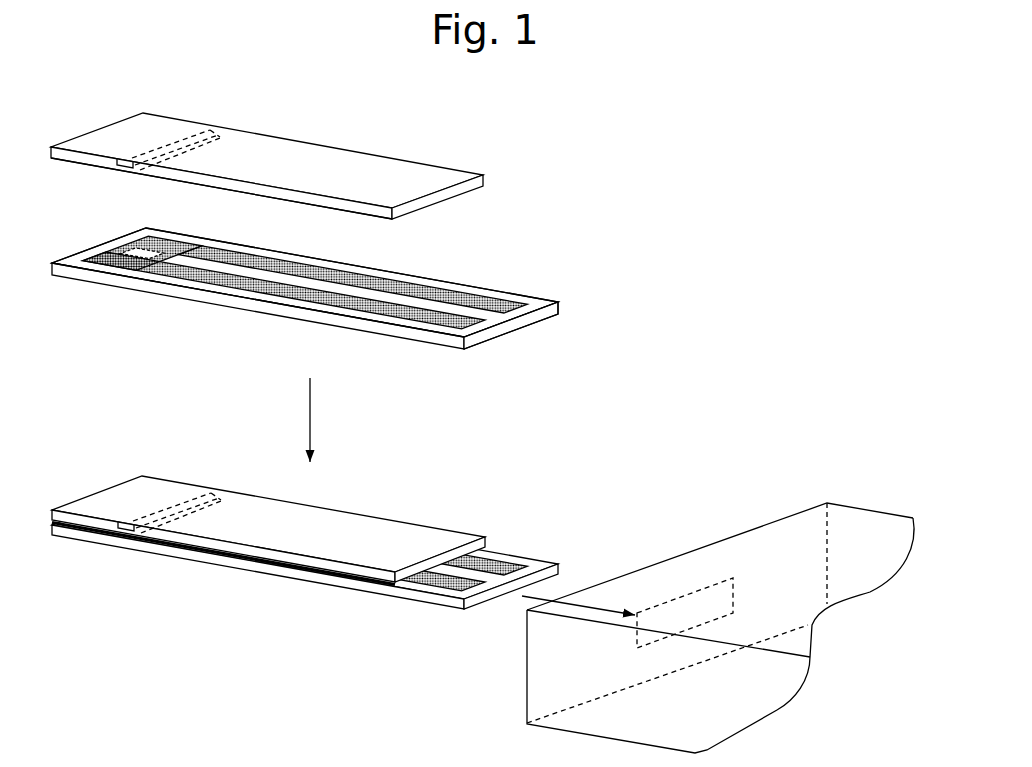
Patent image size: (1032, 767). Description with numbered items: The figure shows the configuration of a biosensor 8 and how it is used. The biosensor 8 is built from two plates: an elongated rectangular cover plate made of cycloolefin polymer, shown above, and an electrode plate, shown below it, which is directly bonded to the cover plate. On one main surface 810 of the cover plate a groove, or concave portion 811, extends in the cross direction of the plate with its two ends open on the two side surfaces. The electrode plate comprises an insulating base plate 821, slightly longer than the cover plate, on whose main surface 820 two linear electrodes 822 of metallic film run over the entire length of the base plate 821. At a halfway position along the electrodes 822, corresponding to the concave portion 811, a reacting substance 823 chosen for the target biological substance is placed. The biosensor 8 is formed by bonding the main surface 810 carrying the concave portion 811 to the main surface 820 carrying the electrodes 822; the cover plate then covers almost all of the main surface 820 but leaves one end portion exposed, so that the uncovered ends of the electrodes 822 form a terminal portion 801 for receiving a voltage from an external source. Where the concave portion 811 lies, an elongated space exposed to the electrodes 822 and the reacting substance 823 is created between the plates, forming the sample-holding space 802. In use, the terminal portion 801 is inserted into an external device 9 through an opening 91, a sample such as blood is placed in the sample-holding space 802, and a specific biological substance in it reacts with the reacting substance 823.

The biosensor 8 is at (315, 523).
The main surface of the cover plate 810 is at (358, 224).
The groove (concave portion) 811 is at (123, 169).
The main surface of the electrode plate 820 is at (235, 237).
The base plate 821 is at (513, 332).
The electrodes 822 is at (442, 303).
The reacting substance 823 is at (96, 256).
The terminal portion 801 is at (528, 548).
The sample-holding space 802 is at (181, 490).
The external device 9 is at (720, 603).
The opening 91 is at (710, 585).